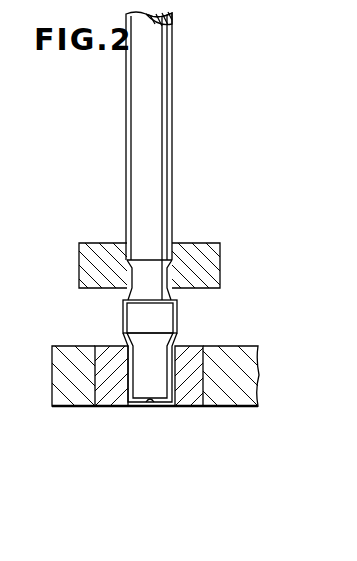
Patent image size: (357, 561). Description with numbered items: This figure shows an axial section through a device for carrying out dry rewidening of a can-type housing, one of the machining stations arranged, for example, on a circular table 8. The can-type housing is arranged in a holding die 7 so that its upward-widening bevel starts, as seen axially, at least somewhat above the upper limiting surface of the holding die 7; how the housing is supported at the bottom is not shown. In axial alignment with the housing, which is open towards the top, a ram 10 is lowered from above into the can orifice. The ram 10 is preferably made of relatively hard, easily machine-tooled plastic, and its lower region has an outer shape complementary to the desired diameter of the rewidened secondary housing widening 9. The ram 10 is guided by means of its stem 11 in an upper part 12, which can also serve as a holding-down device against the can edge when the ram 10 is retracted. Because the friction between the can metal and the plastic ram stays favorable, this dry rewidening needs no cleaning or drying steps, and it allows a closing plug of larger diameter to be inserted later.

The holding die 7 is at (113, 392).
The circular table 8 is at (83, 387).
The secondary housing widening 9 is at (177, 318).
The ram 10 is at (155, 192).
The stem 11 is at (172, 227).
The upper part 12 is at (213, 263).